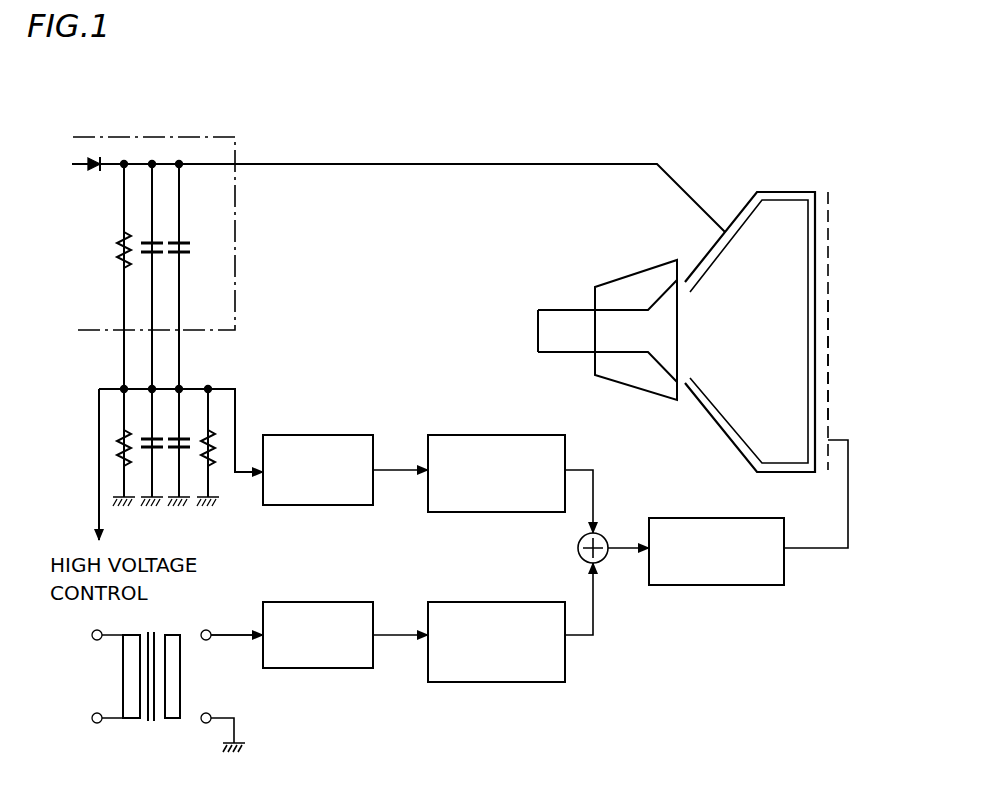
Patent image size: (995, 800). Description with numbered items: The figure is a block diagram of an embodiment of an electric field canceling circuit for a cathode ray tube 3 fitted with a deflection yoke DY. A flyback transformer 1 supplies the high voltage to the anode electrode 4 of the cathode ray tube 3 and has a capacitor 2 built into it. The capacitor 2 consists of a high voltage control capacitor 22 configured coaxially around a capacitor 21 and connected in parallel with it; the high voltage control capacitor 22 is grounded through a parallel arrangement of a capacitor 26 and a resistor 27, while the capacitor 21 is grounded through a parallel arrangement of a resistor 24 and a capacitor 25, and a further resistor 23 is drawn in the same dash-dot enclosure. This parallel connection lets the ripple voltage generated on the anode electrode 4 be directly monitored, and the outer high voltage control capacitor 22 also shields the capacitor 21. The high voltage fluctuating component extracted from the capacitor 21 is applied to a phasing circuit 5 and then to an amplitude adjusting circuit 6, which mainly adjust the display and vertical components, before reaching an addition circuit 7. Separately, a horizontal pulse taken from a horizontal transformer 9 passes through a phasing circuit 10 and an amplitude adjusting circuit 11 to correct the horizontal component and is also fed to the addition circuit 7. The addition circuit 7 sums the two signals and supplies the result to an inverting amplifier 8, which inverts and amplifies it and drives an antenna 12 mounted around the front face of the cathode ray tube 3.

The flyback transformer 1 is at (203, 138).
The capacitor 2 is at (193, 223).
The cathode ray tube 3 is at (738, 177).
The anode electrode 4 is at (812, 257).
The phasing circuit 5 is at (328, 435).
The amplitude adjusting circuit 6 is at (483, 435).
The addition circuit 7 is at (605, 528).
The inverting amplifier 8 is at (723, 518).
The horizontal transformer 9 is at (168, 635).
The phasing circuit 10 is at (323, 602).
The amplitude adjusting circuit 11 is at (488, 602).
The antenna 12 is at (828, 328).
The capacitor 21 is at (187, 253).
The high voltage control capacitor 22 is at (154, 255).
The resistor 23 is at (112, 257).
The resistor 24 is at (213, 452).
The capacitor 25 is at (186, 450).
The capacitor 26 is at (158, 450).
The resistor 27 is at (128, 452).
The deflection yoke DY is at (622, 277).